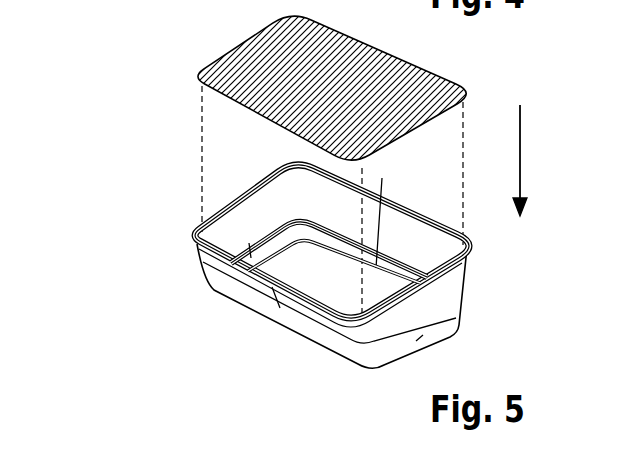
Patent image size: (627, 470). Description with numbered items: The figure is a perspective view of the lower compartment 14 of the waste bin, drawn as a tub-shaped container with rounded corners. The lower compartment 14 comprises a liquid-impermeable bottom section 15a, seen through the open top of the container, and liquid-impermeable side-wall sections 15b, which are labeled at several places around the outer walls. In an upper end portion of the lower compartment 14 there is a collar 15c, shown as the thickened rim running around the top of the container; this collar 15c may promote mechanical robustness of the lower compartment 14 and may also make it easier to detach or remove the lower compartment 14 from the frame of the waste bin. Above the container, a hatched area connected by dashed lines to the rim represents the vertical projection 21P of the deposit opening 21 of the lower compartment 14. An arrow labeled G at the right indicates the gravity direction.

The vertical projection of the deposit opening 21P is at (297, 26).
The deposit opening 21 is at (292, 193).
The lower compartment 14 is at (203, 214).
The bottom section 15a is at (283, 265).
The side-wall sections 15b is at (232, 207).
The collar 15c is at (471, 247).
The gravity direction G is at (520, 152).